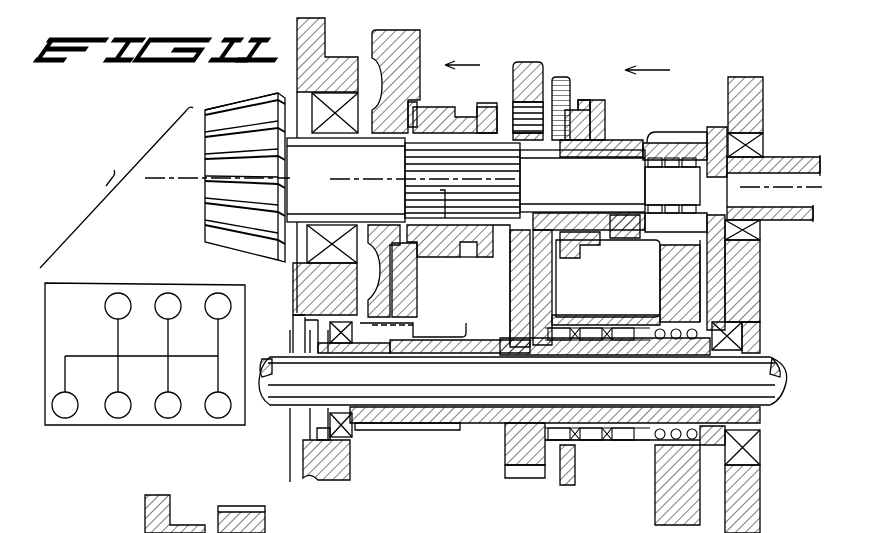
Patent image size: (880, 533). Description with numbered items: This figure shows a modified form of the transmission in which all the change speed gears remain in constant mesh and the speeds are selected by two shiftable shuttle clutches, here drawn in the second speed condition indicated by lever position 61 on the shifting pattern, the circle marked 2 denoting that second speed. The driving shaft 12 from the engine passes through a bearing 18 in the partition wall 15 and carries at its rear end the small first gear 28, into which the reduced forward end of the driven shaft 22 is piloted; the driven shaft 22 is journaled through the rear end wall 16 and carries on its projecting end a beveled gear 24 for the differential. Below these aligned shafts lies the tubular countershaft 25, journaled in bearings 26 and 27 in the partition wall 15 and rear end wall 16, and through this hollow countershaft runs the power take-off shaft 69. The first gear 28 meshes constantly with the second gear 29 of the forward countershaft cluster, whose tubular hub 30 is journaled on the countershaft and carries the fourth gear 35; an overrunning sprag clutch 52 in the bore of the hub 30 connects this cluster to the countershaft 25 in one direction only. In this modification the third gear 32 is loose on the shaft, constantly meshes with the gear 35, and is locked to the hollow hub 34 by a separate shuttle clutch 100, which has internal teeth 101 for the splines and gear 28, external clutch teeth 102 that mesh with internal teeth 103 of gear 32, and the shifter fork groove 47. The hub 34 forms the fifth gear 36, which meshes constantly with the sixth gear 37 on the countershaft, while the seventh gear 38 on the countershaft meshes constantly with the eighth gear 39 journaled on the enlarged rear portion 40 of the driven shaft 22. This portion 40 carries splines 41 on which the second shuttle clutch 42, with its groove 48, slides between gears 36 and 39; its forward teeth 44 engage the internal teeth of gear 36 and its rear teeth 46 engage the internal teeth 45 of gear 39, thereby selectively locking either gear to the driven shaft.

The second gear position 2 is at (233, 280).
The driving shaft 12 is at (790, 160).
The partition wall 15 is at (745, 530).
The rear end wall 16 is at (350, 462).
The bearing 18 is at (758, 145).
The driven shaft 22 is at (614, 155).
The beveled gear 24 is at (202, 234).
The countershaft 25 is at (476, 436).
The bearing 26 is at (760, 334).
The bearing 27 is at (310, 440).
The first gear 28 is at (690, 132).
The second gear 29 is at (762, 272).
The tubular hub 30 is at (612, 462).
The third gear 32 is at (562, 77).
The hollow hub 34 is at (590, 160).
The fourth gear 35 is at (575, 308).
The fifth gear 36 is at (407, 522).
The sixth gear 37 is at (498, 455).
The seventh gear 38 is at (448, 330).
The eighth gear 39 is at (416, 84).
The enlarged rear portion 40 is at (354, 172).
The splines 41 is at (415, 162).
The shuttle clutch 42 is at (468, 106).
The teeth 44 is at (490, 106).
The internal gear teeth 45 is at (415, 272).
The teeth 46 is at (436, 112).
The shifter fork groove 47 is at (584, 100).
The groove 48 is at (468, 257).
The overrunning clutch mechanism 52 is at (540, 62).
The second speed position 61 is at (145, 345).
The power take-off shaft 69 is at (775, 408).
The shuttle clutch 100 is at (607, 90).
The internal teeth 101 is at (600, 240).
The external clutch teeth 102 is at (575, 254).
The internal teeth 103 is at (572, 100).